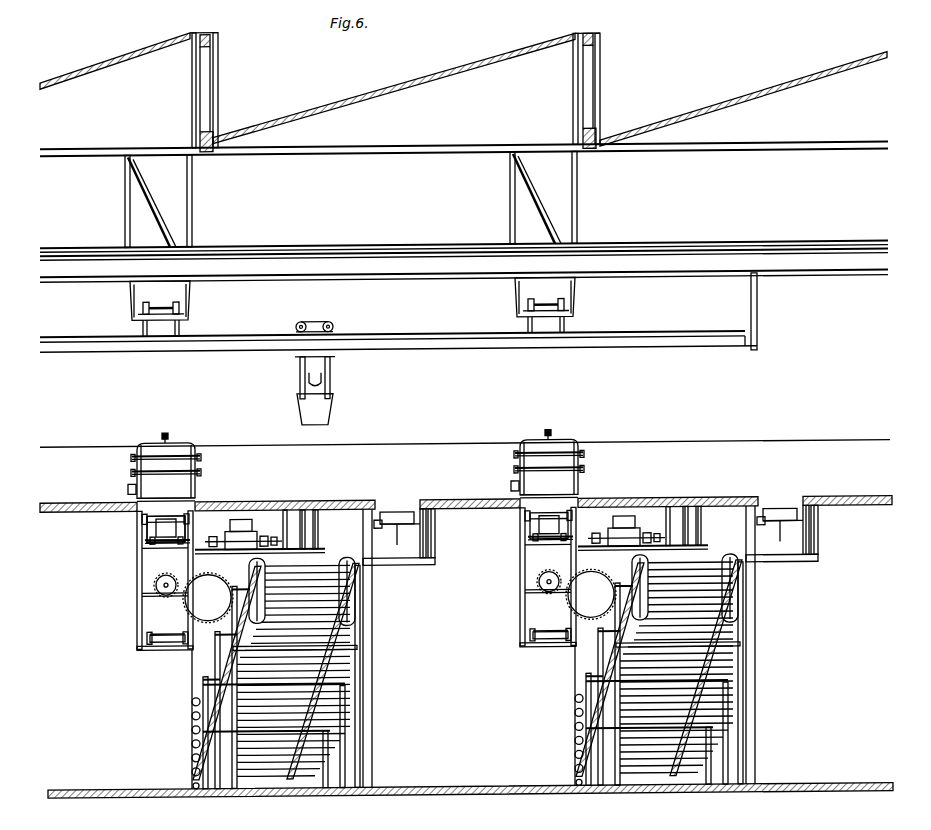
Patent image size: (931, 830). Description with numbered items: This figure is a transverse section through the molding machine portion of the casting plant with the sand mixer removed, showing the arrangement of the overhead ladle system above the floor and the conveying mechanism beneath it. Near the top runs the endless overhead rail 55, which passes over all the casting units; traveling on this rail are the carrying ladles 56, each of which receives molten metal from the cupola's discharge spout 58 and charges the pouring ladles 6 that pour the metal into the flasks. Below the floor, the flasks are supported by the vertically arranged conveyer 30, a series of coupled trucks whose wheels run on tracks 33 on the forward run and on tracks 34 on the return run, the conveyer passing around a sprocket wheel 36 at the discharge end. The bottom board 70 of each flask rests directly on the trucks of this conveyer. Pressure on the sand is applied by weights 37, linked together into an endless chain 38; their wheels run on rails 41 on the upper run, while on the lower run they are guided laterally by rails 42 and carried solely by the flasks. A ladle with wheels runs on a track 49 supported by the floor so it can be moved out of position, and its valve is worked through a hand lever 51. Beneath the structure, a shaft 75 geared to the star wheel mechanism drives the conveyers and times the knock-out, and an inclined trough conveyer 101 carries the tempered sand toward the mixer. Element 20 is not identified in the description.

The pouring ladle 6 is at (362, 466).
The elevator frame 20 is at (141, 521).
The vertically arranged conveyer 30 is at (137, 570).
The tracks 33 is at (167, 540).
The tracks 34 is at (148, 648).
The sprocket wheel 36 is at (633, 494).
The weights 37 is at (660, 496).
The endless chain 38 is at (587, 495).
The rails 41 is at (184, 310).
The rails 42 is at (150, 527).
The track 49 is at (197, 497).
The hand lever 51 is at (353, 463).
The endless overhead rail 55 is at (250, 350).
The carrying ladle 56 is at (324, 406).
The discharge spout 58 is at (312, 379).
The bottom board 70 is at (590, 535).
The shaft 75 is at (165, 592).
The inclined trough conveyer 101 is at (373, 596).